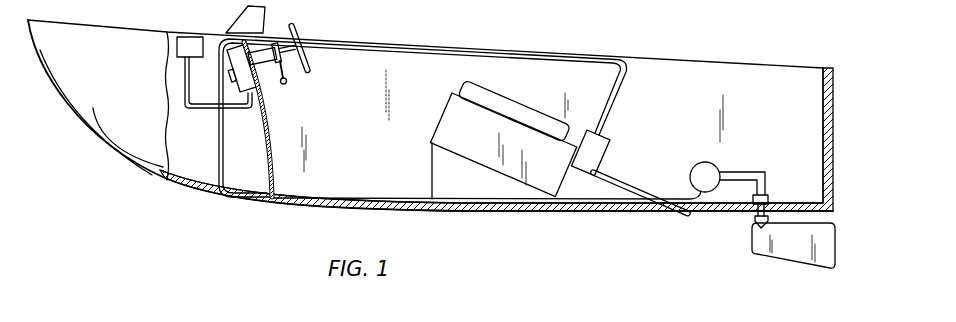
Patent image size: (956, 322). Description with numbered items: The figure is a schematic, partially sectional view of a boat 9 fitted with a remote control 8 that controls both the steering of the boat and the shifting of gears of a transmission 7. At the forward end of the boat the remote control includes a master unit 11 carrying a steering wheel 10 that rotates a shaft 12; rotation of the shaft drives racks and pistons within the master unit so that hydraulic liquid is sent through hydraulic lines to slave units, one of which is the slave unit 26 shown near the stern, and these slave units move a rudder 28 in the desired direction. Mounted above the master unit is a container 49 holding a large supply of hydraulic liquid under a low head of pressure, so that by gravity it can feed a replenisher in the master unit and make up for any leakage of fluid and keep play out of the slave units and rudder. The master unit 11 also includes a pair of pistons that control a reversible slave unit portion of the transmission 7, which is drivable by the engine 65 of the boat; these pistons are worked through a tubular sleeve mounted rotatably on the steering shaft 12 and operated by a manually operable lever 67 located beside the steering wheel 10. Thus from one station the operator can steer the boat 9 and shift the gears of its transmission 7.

The boat 9 is at (486, 222).
The container 49 is at (177, 46).
The remote control 8 is at (243, 122).
The master unit 11 is at (236, 88).
The manually operable lever 67 is at (278, 64).
The shaft 12 is at (293, 62).
The steering wheel 10 is at (310, 63).
The engine 65 is at (447, 120).
The transmission 7 is at (601, 149).
The slave unit 26 is at (700, 161).
The rudder 28 is at (806, 266).